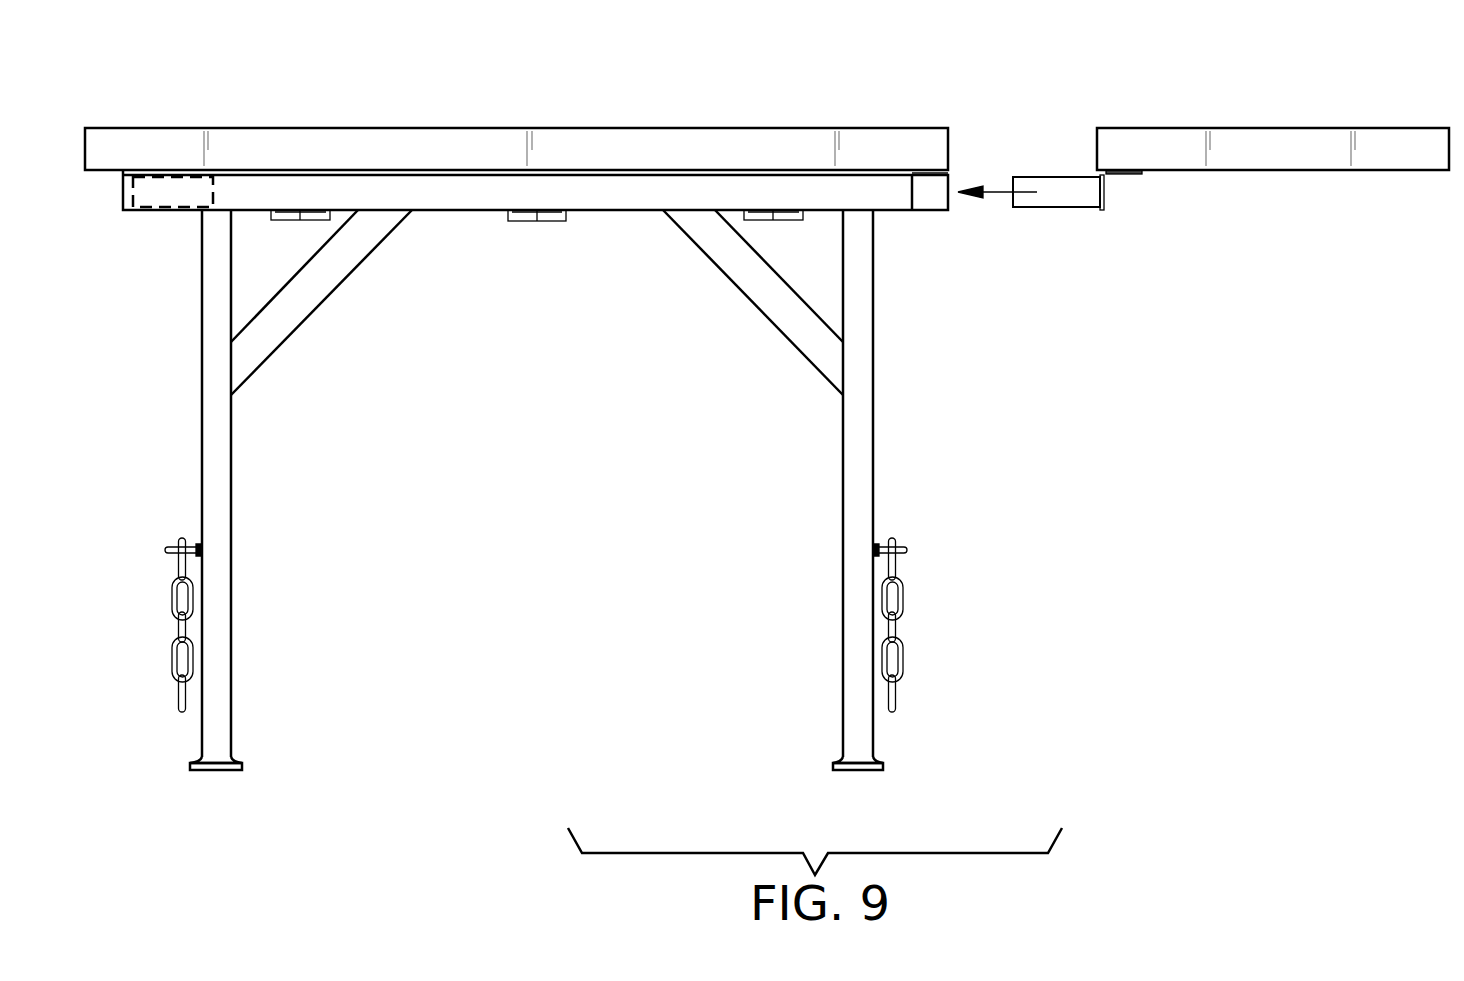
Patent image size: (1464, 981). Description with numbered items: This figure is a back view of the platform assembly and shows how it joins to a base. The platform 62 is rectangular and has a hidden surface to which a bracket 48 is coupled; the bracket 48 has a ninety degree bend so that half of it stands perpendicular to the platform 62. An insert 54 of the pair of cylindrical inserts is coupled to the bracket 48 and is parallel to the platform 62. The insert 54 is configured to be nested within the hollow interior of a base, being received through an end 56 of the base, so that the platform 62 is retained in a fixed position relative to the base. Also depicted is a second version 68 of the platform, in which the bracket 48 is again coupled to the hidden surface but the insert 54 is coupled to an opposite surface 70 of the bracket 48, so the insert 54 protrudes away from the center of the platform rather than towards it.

The platform 62 is at (300, 135).
The end of base 56 is at (122, 215).
The insert 54 is at (1062, 186).
The opposite surface of bracket 70 is at (1087, 208).
The bracket 48 is at (1123, 176).
The second version of the platform 68 is at (1282, 147).